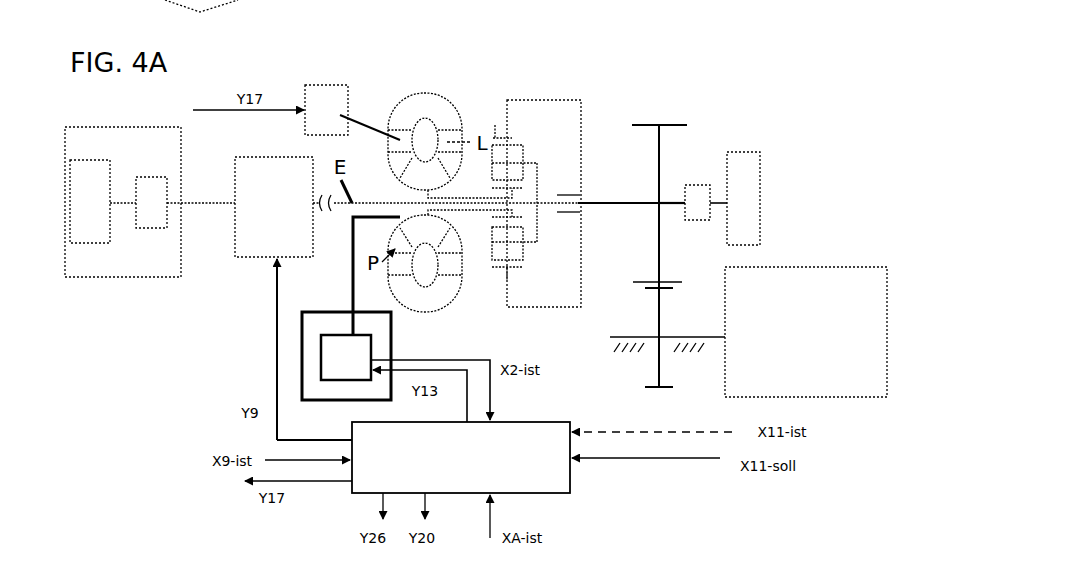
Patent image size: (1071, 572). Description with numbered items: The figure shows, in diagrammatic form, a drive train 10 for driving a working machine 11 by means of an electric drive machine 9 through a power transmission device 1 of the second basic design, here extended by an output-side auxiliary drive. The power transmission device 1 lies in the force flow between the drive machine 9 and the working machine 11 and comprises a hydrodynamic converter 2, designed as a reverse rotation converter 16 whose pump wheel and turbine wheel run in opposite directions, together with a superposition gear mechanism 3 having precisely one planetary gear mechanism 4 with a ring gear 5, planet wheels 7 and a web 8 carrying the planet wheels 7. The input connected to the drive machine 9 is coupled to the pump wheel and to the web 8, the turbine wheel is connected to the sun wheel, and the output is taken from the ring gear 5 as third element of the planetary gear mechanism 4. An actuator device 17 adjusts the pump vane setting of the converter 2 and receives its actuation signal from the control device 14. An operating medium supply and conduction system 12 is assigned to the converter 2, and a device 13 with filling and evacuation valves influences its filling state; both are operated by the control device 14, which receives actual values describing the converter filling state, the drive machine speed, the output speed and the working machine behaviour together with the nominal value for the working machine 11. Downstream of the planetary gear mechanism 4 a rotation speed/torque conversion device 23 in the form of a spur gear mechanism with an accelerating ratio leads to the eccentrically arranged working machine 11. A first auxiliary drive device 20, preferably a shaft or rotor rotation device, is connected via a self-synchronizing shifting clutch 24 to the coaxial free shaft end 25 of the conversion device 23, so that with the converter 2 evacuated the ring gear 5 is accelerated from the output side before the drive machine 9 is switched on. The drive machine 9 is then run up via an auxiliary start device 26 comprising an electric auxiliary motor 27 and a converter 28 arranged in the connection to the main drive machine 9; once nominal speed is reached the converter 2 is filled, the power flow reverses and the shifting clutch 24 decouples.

The power transmission device 1 is at (469, 61).
The hydrodynamic rotation speed/torque converter 2 is at (421, 84).
The superposition gear mechanism 3 is at (554, 80).
The planetary gear mechanism 4 is at (516, 137).
The ring gear 5 is at (497, 136).
The planet wheels 7 is at (513, 255).
The web 8 is at (539, 163).
The drive machine 9 is at (274, 207).
The drive train 10 is at (509, 42).
The working machine 11 is at (806, 332).
The operating medium supply and/or conduction system 12 is at (352, 291).
The filling and evacuation device 13 is at (346, 357).
The control device 14 is at (543, 483).
The reverse rotation converter 16 is at (376, 198).
The actuator device 17 is at (352, 112).
The first auxiliary drive device 20 is at (748, 181).
The rotation speed/torque conversion device 23 is at (656, 107).
The self-synchronizing shifting clutch 24 is at (692, 192).
The free shaft end 25 is at (668, 208).
The auxiliary start device 26 is at (123, 252).
The auxiliary motor 27 is at (95, 243).
The converter 28 is at (156, 218).